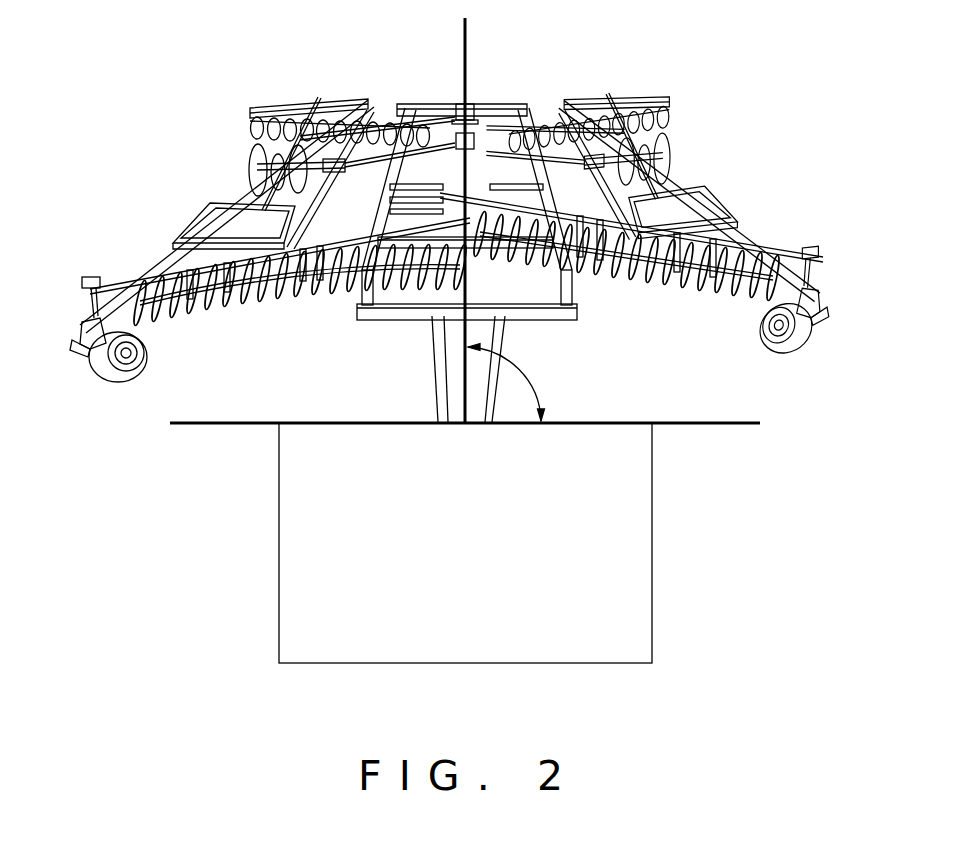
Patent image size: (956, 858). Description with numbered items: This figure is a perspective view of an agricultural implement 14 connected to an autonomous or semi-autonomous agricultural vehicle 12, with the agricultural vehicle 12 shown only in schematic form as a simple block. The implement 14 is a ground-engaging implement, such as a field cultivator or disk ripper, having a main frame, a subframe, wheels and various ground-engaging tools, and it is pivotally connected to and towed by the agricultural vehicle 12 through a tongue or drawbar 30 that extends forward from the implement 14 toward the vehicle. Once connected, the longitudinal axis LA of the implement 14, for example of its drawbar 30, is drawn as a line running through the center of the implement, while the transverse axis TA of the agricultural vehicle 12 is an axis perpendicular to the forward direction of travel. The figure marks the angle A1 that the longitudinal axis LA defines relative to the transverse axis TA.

The agricultural vehicle 12 is at (262, 622).
The agricultural implement 14 is at (133, 254).
The tongue or drawbar 30 is at (437, 413).
The longitudinal axis LA is at (463, 43).
The transverse axis TA is at (201, 425).
The angle A1 is at (527, 372).